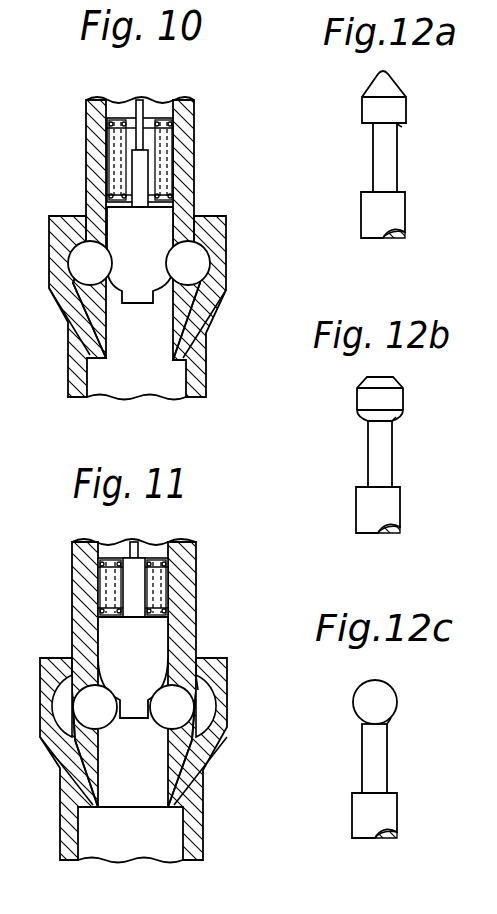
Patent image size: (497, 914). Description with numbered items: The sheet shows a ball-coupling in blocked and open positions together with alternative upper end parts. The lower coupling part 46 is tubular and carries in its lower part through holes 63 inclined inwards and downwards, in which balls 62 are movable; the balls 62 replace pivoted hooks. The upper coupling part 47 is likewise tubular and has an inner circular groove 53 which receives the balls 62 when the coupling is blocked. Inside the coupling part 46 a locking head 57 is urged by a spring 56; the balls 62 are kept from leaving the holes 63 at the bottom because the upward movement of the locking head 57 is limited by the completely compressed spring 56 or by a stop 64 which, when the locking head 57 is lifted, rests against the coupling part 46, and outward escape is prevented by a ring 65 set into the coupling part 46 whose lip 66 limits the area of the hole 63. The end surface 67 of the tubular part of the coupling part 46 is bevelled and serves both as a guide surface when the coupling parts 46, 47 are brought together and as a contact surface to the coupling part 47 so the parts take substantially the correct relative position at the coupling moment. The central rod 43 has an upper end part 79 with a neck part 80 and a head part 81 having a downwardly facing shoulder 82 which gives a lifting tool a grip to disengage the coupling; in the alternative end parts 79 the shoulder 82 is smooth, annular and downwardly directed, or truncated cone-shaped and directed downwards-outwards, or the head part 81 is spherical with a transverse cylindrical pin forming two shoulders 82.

In FIG. 10, the central rod 43 is at (143, 102).
In FIG. 11, the central rod 43 is at (136, 550).
In FIG. 10, the coupling part 46 is at (187, 157).
In FIG. 11, the coupling part 46 is at (88, 584).
In FIG. 10, the coupling part 47 is at (213, 222).
In FIG. 11, the coupling part 47 is at (52, 658).
In FIG. 10, the inner circular groove 53 is at (62, 303).
In FIG. 11, the inner circular groove 53 is at (215, 703).
In FIG. 10, the spring 56 is at (114, 172).
In FIG. 11, the spring 56 is at (165, 583).
In FIG. 10, the locking head 57 is at (140, 255).
In FIG. 11, the locking head 57 is at (133, 667).
In FIG. 10, the balls 62 is at (139, 263).
In FIG. 11, the balls 62 is at (133, 707).
In FIG. 10, the through holes 63 is at (72, 330).
In FIG. 11, the through holes 63 is at (195, 723).
In FIG. 10, the stop 64 is at (112, 124).
In FIG. 11, the stop 64 is at (125, 556).
In FIG. 11, the ring 65 is at (198, 676).
In FIG. 11, the lip 66 is at (202, 680).
In FIG. 11, the end surface 67 is at (178, 797).
In FIG. 12A, the upper end part 79 is at (348, 226).
In FIG. 12B, the upper end part 79 is at (341, 524).
In FIG. 12C, the upper end part 79 is at (338, 834).
In FIG. 12A, the neck part 80 is at (387, 175).
In FIG. 12B, the neck part 80 is at (380, 470).
In FIG. 12C, the neck part 80 is at (375, 770).
In FIG. 12A, the head part 81 is at (396, 111).
In FIG. 12B, the head part 81 is at (392, 395).
In FIG. 12C, the head part 81 is at (383, 690).
In FIG. 12A, the shoulder 82 is at (402, 125).
In FIG. 12B, the shoulder 82 is at (398, 416).
In FIG. 12C, the shoulder 82 is at (390, 714).